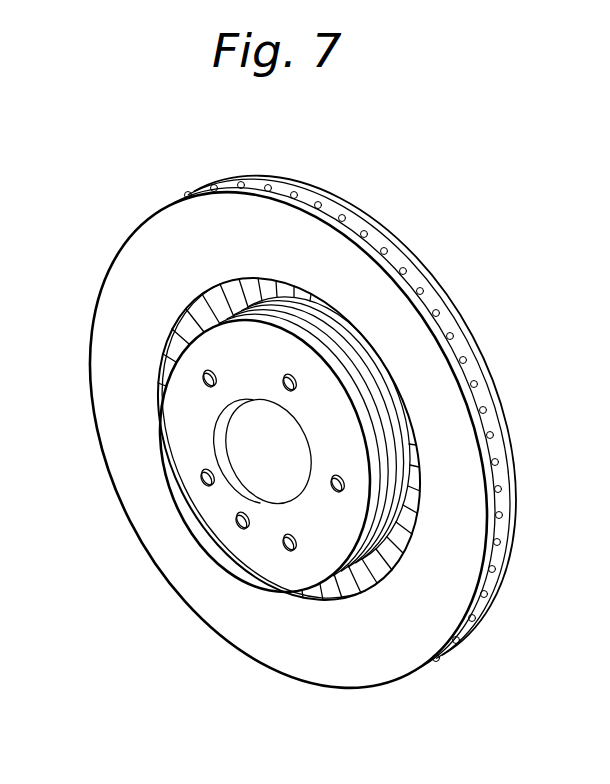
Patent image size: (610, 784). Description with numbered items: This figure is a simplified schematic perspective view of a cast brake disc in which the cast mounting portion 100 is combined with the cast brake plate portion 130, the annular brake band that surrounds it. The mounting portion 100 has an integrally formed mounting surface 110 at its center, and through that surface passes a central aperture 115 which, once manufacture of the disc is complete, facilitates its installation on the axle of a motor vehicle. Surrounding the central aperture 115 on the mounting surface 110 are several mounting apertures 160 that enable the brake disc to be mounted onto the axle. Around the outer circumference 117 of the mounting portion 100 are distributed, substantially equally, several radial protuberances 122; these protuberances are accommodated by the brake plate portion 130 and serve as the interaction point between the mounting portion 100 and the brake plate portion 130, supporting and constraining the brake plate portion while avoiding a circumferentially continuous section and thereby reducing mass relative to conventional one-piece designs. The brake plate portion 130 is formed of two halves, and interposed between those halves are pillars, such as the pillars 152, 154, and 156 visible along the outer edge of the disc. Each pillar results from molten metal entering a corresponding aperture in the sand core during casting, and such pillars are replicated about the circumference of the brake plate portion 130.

The mounting portion 100 is at (289, 440).
The mounting surface 110 is at (217, 503).
The aperture 115 is at (252, 422).
The outer circumference 117 is at (380, 436).
The radial protuberances 122 is at (374, 372).
The brake plate portion 130 is at (148, 265).
The pillar 152 is at (447, 332).
The pillar 154 is at (470, 355).
The pillar 156 is at (477, 382).
The mounting apertures 160 is at (205, 376).